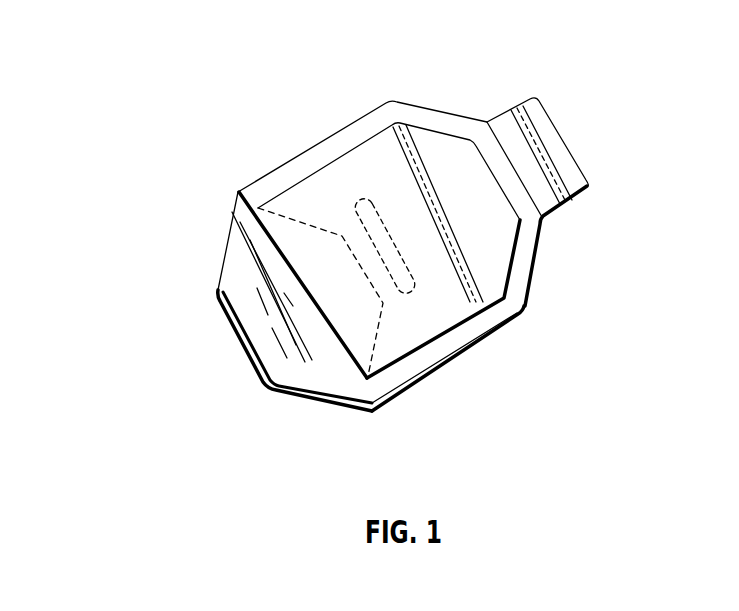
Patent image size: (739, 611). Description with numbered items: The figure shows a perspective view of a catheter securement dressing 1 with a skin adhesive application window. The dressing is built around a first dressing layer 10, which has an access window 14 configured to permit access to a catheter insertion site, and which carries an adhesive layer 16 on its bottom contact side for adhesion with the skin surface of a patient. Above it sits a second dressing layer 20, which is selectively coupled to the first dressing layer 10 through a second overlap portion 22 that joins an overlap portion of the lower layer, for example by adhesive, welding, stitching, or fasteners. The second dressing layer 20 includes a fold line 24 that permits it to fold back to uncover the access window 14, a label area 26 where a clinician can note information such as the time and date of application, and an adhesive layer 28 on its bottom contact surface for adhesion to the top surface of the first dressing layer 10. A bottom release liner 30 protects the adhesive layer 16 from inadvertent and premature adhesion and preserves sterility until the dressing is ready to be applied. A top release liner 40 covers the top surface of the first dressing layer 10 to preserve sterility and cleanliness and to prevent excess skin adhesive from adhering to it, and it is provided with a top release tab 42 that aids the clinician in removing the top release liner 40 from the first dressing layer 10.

The catheter securement dressing 1 is at (106, 32).
The first dressing layer 10 is at (446, 373).
The access window 14 is at (353, 203).
The adhesive layer 16 is at (491, 346).
The second dressing layer 20 is at (310, 190).
The second overlap portion 22 is at (247, 305).
The fold line 24 is at (252, 198).
The label area 26 is at (343, 393).
The adhesive layer 28 is at (396, 398).
The bottom release liner 30 is at (532, 282).
The top release liner 40 is at (433, 118).
The top release tab 42 is at (558, 148).